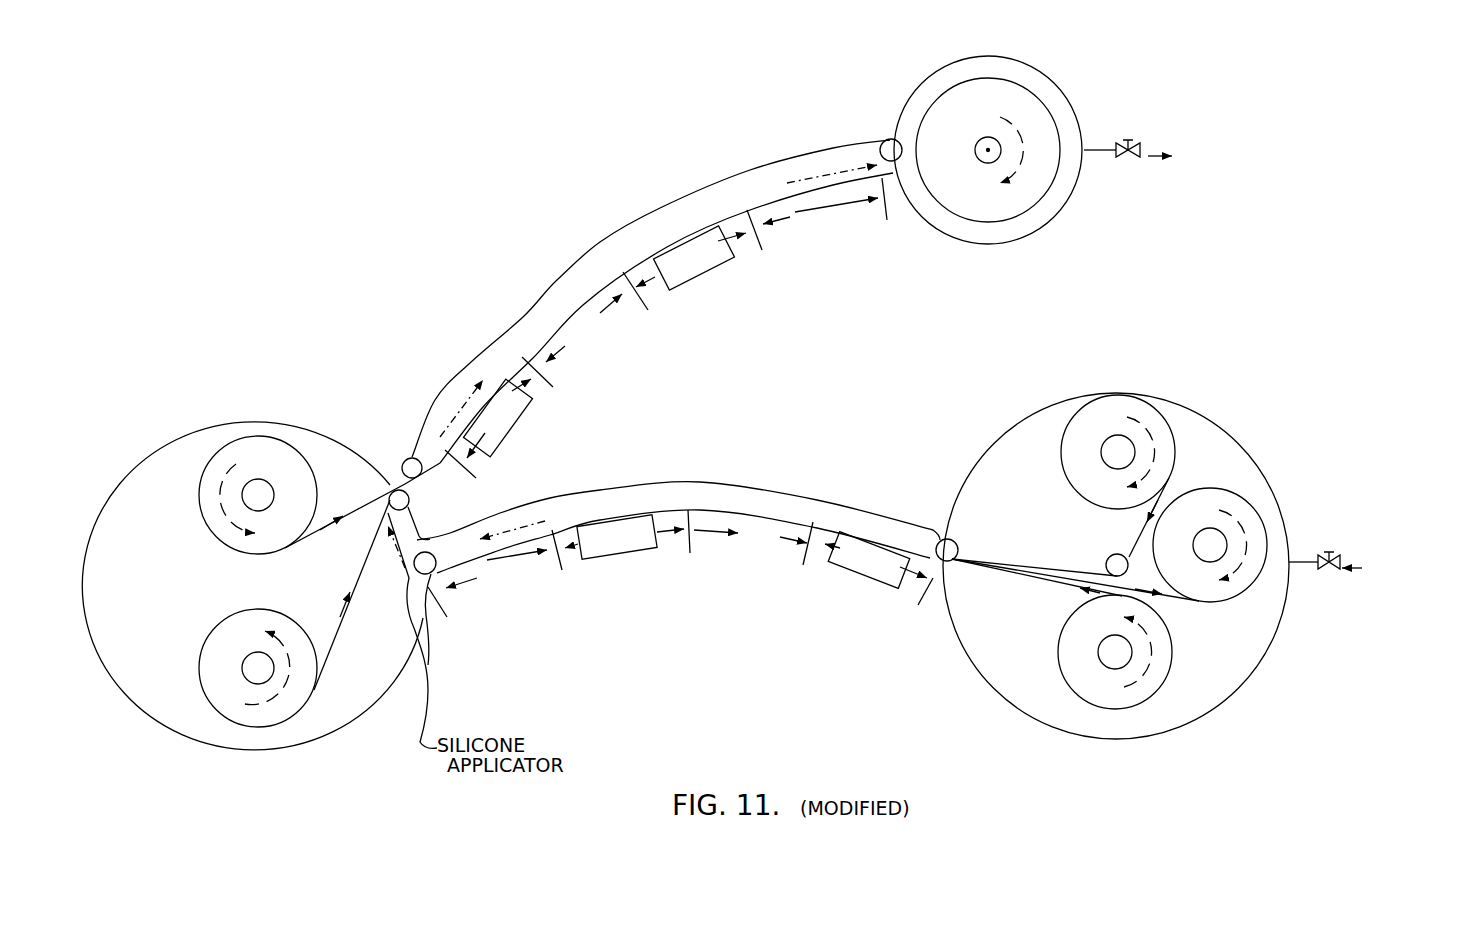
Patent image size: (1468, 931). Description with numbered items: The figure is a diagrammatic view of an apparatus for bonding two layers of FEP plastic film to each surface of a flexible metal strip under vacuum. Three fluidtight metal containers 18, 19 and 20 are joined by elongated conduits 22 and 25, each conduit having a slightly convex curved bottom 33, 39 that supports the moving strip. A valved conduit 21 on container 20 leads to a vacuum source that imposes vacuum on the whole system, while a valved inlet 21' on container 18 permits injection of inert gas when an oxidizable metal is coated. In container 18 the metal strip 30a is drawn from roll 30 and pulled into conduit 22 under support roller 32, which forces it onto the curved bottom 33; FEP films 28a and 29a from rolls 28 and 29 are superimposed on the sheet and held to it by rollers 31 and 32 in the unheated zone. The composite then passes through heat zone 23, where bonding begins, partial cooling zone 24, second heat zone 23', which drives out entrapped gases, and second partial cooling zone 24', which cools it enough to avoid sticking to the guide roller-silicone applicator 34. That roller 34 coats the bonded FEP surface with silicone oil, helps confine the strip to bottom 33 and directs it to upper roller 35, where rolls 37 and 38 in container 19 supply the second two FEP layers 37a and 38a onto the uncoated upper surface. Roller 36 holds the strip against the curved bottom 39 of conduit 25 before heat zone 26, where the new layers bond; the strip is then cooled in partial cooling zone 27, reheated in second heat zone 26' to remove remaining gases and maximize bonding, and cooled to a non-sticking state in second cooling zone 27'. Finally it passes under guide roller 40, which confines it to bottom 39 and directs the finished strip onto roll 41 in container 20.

The container 18 is at (1010, 700).
The container 19 is at (330, 735).
The container 20 is at (1068, 100).
The valved conduit 21 is at (1191, 159).
The valved inlet 21' is at (1368, 584).
The conduit 22 is at (740, 481).
The heat zone 23 is at (879, 594).
The second heat zone 23' is at (627, 575).
The partial cooling zone 24 is at (753, 574).
The second partial cooling zone 24' is at (506, 617).
The conduit 25 is at (660, 210).
The heat zone 26 is at (544, 417).
The second heat zone 26' is at (726, 268).
The partial cooling zone 27 is at (635, 340).
The second cooling zone 27' is at (836, 224).
The roll 28 is at (1141, 395).
The FEP film 28a is at (1146, 515).
The roll 29 is at (1225, 490).
The FEP film 29a is at (1182, 602).
The roll 30 is at (1142, 700).
The metal strip 30a is at (1070, 589).
The roller 31 is at (1108, 562).
The support roller 32 is at (957, 550).
The curved bottom 33 is at (840, 530).
The guide roller-silicone applicator 34 is at (420, 570).
The upper roller 35 is at (389, 478).
The roller 36 is at (414, 458).
The roll 37 is at (277, 727).
The FEP film layer 37a is at (352, 595).
The roll 38 is at (247, 437).
The FEP film layer 38a is at (362, 514).
The curved bottom 39 is at (527, 343).
The guide roller 40 is at (885, 140).
The roll 41 is at (1020, 83).